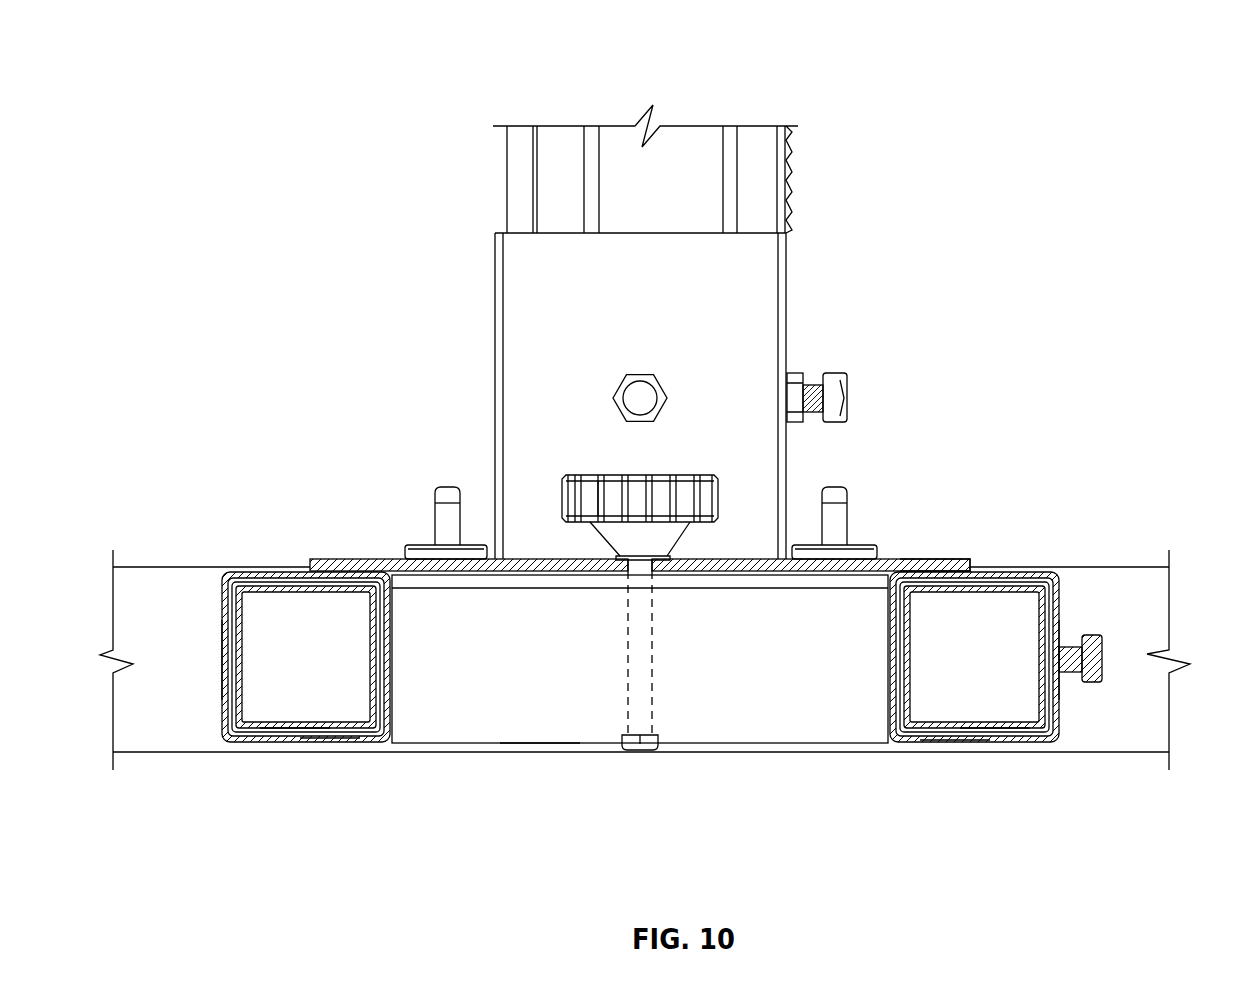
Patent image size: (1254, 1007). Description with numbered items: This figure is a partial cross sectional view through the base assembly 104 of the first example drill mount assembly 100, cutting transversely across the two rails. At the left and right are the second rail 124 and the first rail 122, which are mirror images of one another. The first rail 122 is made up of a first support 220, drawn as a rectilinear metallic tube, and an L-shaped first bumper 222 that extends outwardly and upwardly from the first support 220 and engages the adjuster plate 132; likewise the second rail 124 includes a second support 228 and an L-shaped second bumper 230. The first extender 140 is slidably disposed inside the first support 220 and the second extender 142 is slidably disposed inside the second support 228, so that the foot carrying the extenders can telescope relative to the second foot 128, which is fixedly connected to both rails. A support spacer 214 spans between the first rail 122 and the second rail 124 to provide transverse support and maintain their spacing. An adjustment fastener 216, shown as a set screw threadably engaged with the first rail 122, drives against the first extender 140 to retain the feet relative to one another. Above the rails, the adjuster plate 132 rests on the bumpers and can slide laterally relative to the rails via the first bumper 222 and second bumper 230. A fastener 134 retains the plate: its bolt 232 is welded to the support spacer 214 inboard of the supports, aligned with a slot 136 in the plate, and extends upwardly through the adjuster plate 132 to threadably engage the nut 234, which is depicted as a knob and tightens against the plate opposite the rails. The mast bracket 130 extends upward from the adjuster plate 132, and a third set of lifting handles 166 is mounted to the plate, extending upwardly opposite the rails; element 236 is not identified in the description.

The drill mount assembly 100 is at (268, 70).
The base assembly 104 is at (535, 805).
The first rail 122 is at (958, 805).
The second rail 124 is at (274, 800).
The second foot 128 is at (1072, 567).
The mast bracket 130 is at (664, 352).
The adjuster plate 132 is at (348, 560).
The fastener 134 is at (720, 495).
The slot 136 is at (622, 560).
The first extender 140 is at (992, 729).
The second extender 142 is at (293, 729).
The third set of lifting handles 166 is at (833, 482).
The support spacer 214 is at (794, 674).
The adjustment fastener 216 is at (1092, 655).
The first support 220 is at (937, 738).
The first bumper 222 is at (1060, 713).
The second support 228 is at (345, 739).
The second bumper 230 is at (222, 716).
The bolt 232 is at (652, 705).
The nut 234 is at (600, 495).
The plate edge 236 is at (910, 560).